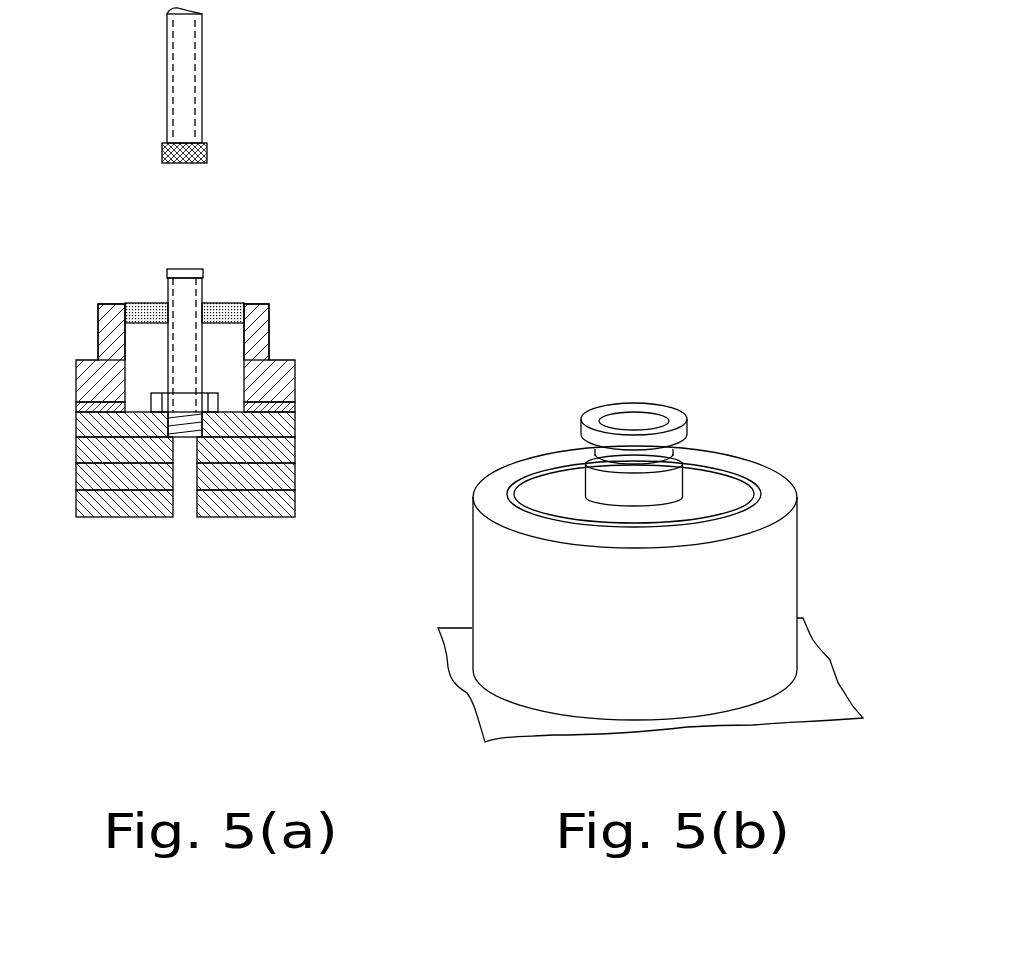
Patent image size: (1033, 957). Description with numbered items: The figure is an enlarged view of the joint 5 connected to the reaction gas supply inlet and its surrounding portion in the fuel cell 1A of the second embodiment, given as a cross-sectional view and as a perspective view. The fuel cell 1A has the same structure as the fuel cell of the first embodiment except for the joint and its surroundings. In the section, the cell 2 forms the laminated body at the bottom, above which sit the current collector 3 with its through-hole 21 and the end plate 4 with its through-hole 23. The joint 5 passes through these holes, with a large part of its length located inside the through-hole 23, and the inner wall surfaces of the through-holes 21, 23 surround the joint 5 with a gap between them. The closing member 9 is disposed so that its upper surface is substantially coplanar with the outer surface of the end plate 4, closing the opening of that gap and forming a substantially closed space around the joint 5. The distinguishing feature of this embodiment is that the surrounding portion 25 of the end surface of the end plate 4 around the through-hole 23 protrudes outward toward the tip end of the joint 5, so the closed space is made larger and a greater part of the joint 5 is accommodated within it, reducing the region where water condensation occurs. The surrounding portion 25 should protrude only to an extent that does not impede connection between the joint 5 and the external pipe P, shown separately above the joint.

In FIG. 5A, the external pipe P is at (188, 70).
In FIG. 5A, the fuel cell 1A is at (410, 148).
In FIG. 5A, the cell 2 is at (82, 497).
In FIG. 5A, the current collector 3 is at (90, 405).
In FIG. 5A, the end plate 4 is at (93, 381).
In FIG. 5B, the end plate 4 is at (470, 645).
In FIG. 5A, the joint 5 is at (204, 291).
In FIG. 5B, the joint 5 is at (690, 418).
In FIG. 5A, the closing member 9 is at (148, 312).
In FIG. 5B, the closing member 9 is at (720, 492).
In FIG. 5A, the through-hole 21 is at (77, 425).
In FIG. 5A, the through-hole 23 is at (126, 366).
In FIG. 5A, the surrounding portion 25 is at (262, 342).
In FIG. 5B, the surrounding portion 25 is at (750, 588).